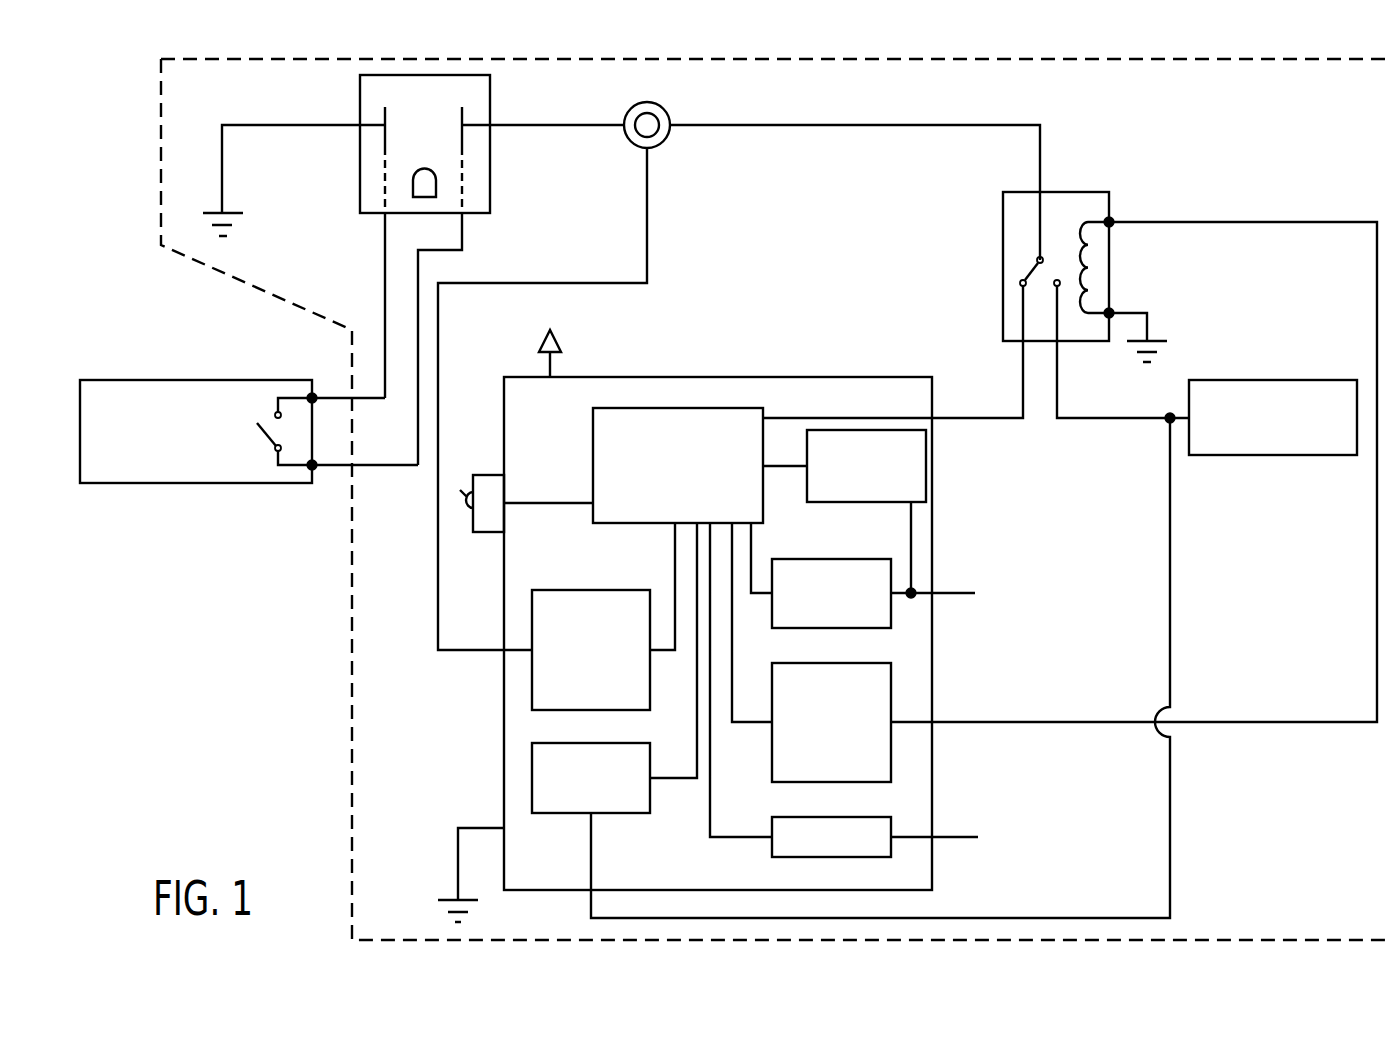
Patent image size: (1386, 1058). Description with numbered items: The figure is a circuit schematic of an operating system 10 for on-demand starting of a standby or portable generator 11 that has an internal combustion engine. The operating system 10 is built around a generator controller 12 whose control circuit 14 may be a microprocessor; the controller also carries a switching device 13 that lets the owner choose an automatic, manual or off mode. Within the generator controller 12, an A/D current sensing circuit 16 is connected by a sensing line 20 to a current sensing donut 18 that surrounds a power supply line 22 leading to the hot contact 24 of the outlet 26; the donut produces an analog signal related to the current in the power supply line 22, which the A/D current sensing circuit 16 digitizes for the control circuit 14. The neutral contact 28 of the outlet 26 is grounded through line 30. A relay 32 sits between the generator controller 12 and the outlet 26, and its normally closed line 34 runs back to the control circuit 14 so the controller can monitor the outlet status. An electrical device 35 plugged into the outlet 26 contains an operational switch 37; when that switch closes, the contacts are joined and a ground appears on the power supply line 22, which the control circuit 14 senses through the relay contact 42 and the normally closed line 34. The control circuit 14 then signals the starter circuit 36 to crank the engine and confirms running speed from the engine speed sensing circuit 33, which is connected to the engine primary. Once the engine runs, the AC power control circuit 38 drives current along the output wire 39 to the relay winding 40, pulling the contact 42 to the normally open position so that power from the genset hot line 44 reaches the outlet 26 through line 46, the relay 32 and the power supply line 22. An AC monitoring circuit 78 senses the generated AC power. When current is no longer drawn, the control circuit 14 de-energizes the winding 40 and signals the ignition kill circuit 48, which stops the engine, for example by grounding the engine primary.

The operating system 10 is at (1152, 157).
The generator 11 is at (352, 635).
The generator controller 12 is at (722, 375).
The switching device 13 is at (492, 490).
The control circuit 14 is at (593, 468).
The A/D current sensing circuit 16 is at (532, 672).
The current sensing donut 18 is at (665, 108).
The sensing line 20 is at (647, 215).
The power supply line 22 is at (838, 128).
The hot contact 24 is at (462, 143).
The outlet 26 is at (490, 102).
The neutral contact 28 is at (385, 143).
The ground line 30 is at (247, 124).
The relay 32 is at (1025, 192).
The engine speed sensing circuit 33 is at (926, 468).
The normally closed line 34 is at (1020, 390).
The electrical device 35 is at (195, 483).
The starter circuit 36 is at (891, 817).
The operational switch 37 is at (265, 438).
The AC power control circuit 38 is at (891, 690).
The output wire 39 is at (1275, 722).
The relay winding 40 is at (1085, 270).
The contact 42 is at (1030, 272).
The genset hot line 44 is at (1273, 380).
The line 46 is at (1120, 420).
The ignition kill circuit 48 is at (867, 559).
The AC monitoring circuit 78 is at (532, 780).